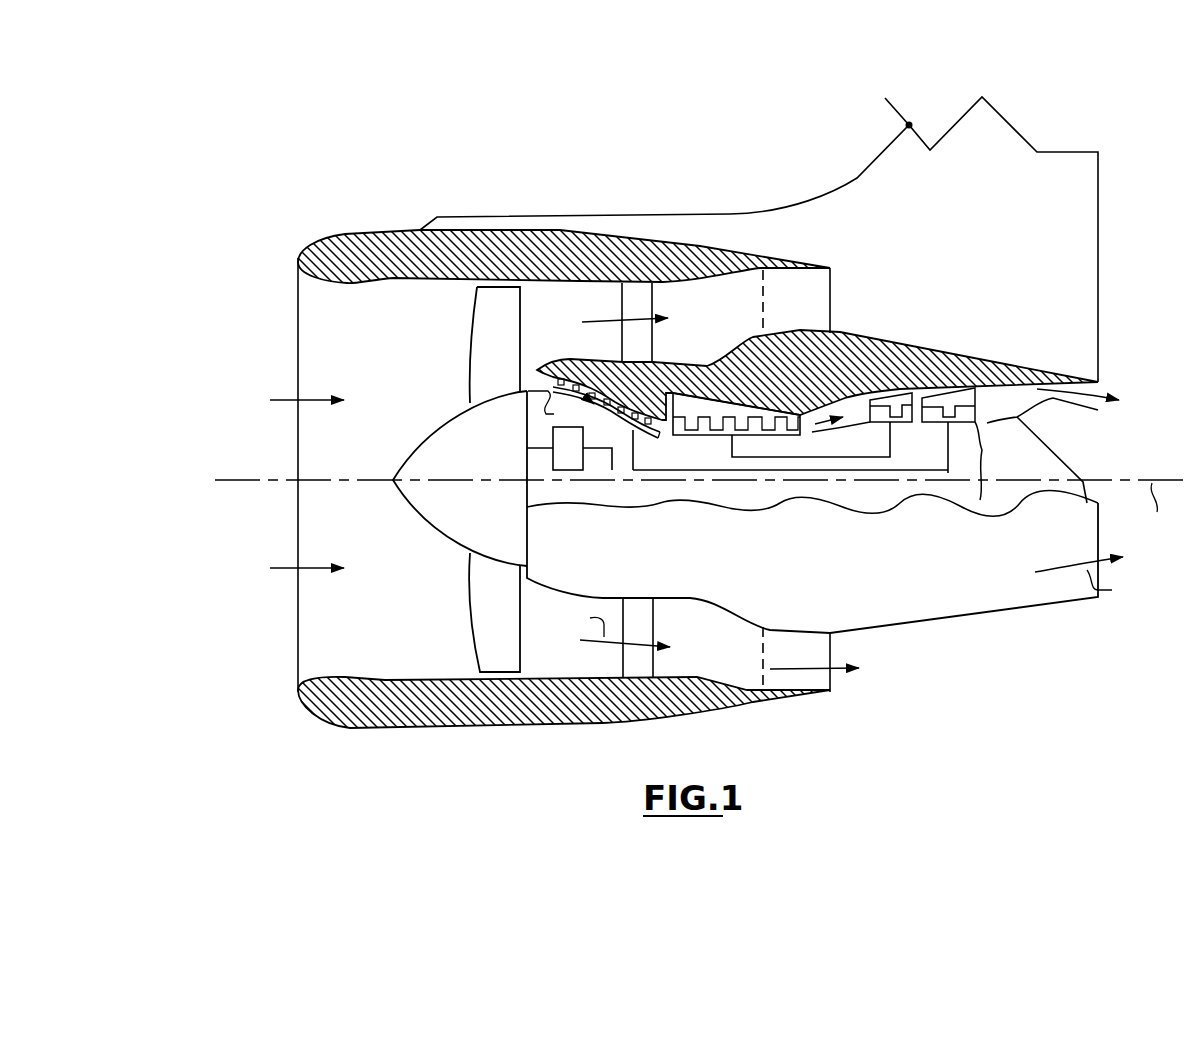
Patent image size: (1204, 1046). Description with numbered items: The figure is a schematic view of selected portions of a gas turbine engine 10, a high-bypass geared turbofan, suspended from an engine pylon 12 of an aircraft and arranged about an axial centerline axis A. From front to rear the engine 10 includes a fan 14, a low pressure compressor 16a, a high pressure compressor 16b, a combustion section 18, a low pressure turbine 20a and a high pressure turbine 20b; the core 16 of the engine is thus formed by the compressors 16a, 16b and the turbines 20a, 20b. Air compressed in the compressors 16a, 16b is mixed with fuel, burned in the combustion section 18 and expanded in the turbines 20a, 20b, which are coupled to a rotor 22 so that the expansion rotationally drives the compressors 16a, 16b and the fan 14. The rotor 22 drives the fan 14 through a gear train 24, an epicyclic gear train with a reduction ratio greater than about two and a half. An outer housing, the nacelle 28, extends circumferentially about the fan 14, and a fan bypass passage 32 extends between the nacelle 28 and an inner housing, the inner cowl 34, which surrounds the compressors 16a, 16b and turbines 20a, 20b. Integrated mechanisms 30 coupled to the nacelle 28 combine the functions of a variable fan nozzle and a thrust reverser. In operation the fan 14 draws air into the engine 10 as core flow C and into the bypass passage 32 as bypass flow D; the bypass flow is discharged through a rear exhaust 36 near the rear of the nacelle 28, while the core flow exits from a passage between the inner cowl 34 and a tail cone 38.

The gas turbine engine 10 is at (250, 180).
The engine pylon 12 is at (1012, 142).
The fan 14 is at (473, 623).
The core engine 16 is at (670, 470).
The low pressure compressor 16a is at (635, 437).
The high pressure compressor 16b is at (720, 418).
The combustion section 18 is at (845, 433).
The low pressure turbine 20a is at (977, 430).
The high pressure turbine 20b is at (903, 422).
The rotor 22 is at (792, 457).
The gear train 24 is at (565, 465).
The nacelle 28 is at (556, 240).
The integrated mechanism 30 is at (808, 247).
The fan bypass passage 32 is at (731, 337).
The inner cowl 34 is at (945, 355).
The rear exhaust 36 is at (820, 296).
The tail cone 38 is at (1065, 472).